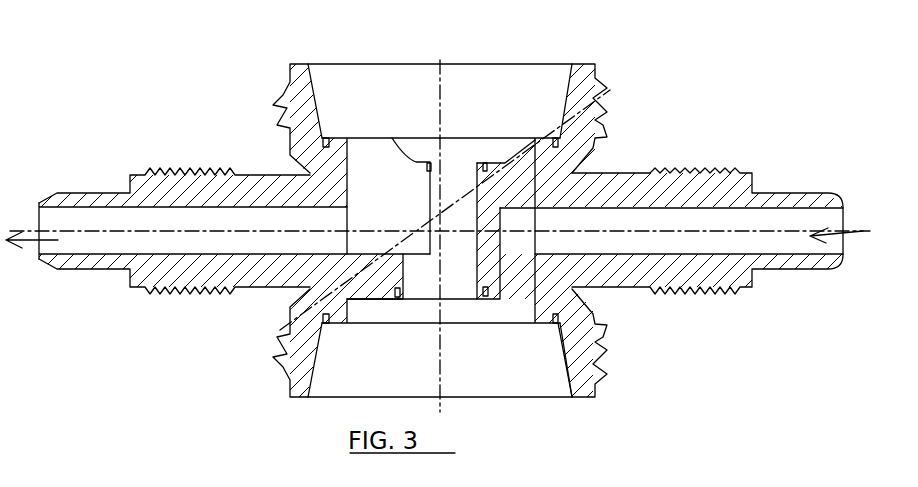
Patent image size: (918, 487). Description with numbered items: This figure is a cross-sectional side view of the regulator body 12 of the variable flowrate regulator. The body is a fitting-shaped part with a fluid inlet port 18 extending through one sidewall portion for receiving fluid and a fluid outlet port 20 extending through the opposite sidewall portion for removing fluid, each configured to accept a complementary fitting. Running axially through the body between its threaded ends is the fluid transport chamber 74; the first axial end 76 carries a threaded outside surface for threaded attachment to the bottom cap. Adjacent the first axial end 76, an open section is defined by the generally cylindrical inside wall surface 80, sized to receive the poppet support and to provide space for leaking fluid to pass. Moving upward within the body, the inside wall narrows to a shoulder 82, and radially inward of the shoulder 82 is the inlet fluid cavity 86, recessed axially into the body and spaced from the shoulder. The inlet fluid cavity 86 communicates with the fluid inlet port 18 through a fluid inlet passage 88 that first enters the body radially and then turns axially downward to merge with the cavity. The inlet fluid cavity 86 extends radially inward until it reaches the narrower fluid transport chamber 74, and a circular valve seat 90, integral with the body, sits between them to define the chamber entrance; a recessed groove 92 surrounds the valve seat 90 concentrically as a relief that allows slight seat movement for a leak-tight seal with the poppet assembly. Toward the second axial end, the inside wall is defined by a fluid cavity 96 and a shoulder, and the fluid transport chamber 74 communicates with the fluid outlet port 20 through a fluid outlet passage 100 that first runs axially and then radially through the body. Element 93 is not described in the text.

The regulator body 12 is at (598, 137).
The fluid inlet port 18 is at (730, 167).
The fluid outlet port 20 is at (180, 290).
The fluid transport chamber 74 is at (452, 226).
The first axial end 76 is at (580, 397).
The inside wall surface 80 is at (555, 353).
The shoulder 82 is at (330, 320).
The inlet fluid cavity 86 is at (380, 296).
The fluid inlet passage 88 is at (630, 237).
The valve seat 90 is at (408, 298).
The recessed groove 92 is at (470, 298).
The seal 93 is at (337, 138).
The fluid cavity 96 is at (535, 150).
The fluid outlet passage 100 is at (268, 231).